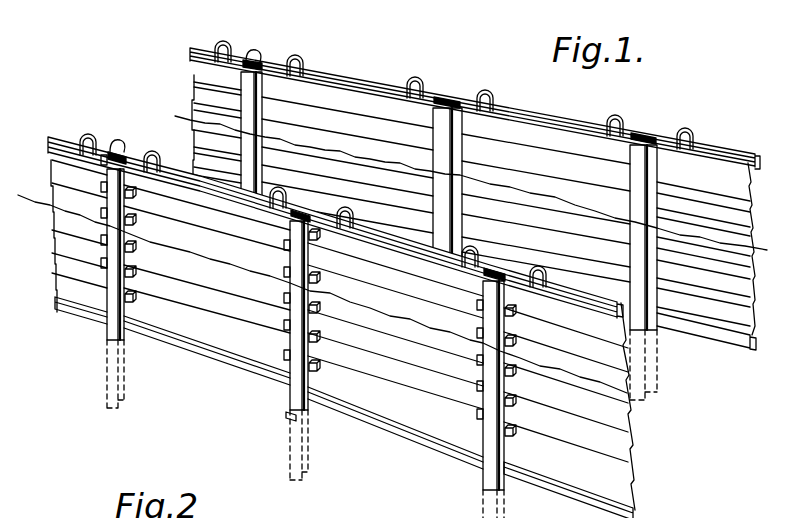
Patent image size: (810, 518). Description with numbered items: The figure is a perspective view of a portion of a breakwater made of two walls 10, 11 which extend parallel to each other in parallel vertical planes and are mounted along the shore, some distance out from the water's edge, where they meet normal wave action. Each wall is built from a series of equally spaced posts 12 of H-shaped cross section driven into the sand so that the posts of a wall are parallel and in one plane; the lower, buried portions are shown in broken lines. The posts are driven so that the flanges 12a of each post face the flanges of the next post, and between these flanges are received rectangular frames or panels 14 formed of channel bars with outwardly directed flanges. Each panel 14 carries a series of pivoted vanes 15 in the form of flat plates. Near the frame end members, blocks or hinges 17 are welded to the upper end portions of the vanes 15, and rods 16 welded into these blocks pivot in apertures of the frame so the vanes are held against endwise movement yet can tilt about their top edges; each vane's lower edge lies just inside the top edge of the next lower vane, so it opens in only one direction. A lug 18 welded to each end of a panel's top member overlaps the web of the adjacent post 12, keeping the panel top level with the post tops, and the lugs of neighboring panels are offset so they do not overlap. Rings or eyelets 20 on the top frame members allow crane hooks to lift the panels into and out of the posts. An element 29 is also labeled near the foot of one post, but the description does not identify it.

The wall 10 is at (57, 120).
The wall 11 is at (183, 42).
The post 12 is at (649, 139).
The flange 12a is at (138, 378).
The frame or panel 14 is at (359, 78).
The vane 15 is at (734, 320).
The rod 16 is at (513, 405).
The block or hinge 17 is at (491, 392).
The lug 18 is at (262, 63).
The ring or eyelet 20 is at (462, 97).
The post base spacer 29 is at (268, 421).